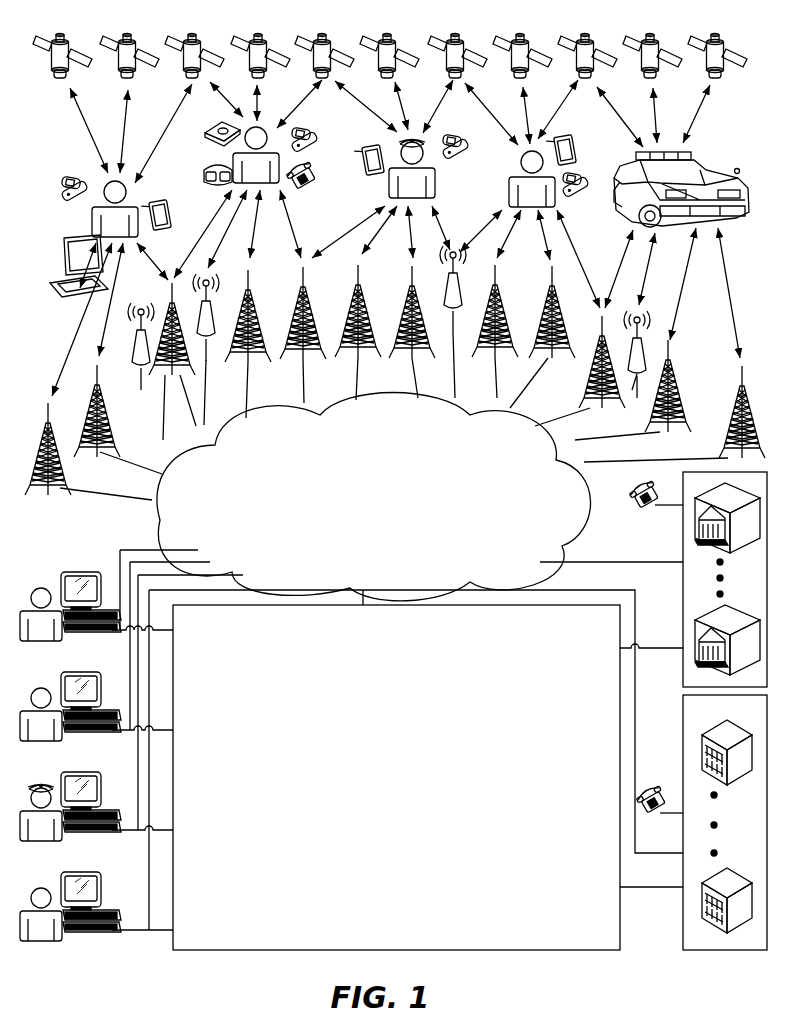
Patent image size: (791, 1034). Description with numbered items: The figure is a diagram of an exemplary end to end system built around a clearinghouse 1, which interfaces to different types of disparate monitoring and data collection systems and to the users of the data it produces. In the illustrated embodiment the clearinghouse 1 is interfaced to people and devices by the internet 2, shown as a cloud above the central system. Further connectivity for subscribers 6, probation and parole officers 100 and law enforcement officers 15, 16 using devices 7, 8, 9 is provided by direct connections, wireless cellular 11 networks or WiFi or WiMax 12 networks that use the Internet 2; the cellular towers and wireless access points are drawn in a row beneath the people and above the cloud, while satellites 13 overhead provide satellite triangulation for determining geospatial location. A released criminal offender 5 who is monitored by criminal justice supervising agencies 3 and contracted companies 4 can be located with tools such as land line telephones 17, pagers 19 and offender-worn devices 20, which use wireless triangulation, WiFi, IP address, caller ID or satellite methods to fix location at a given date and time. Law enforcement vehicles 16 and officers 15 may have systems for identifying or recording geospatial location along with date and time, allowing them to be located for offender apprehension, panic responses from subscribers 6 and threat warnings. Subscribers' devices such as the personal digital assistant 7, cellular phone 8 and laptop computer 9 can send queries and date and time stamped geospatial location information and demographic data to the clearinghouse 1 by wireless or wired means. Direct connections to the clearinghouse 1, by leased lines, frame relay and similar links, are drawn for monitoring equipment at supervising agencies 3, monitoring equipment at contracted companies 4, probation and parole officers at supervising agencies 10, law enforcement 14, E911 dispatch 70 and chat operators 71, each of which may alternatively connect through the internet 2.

The clearinghouse 1 is at (403, 825).
The internet 2 is at (384, 531).
The supervising agencies 3 is at (683, 594).
The contracted companies 4 is at (683, 720).
The released criminal offender 5 is at (265, 128).
The subscriber 6 is at (92, 220).
The personal digital assistant (PDA) 7 is at (168, 228).
The cellular phone 8 is at (64, 180).
The laptop computer 9 is at (63, 253).
The probation and parole officers at supervising agencies 10 is at (48, 642).
The wireless cellular network 11 is at (80, 426).
The WiFi or WiMax network 12 is at (138, 368).
The satellite 13 is at (105, 38).
The law enforcement 14 is at (48, 842).
The law enforcement officer 15 is at (390, 190).
The law enforcement vehicle 16 is at (735, 216).
The land line telephone 17 is at (308, 190).
The pager 19 is at (214, 124).
The offender-worn device 20 is at (202, 172).
The E911 dispatch 70 is at (48, 942).
The chat operators 71 is at (48, 742).
The probation and parole officers 100 is at (509, 190).